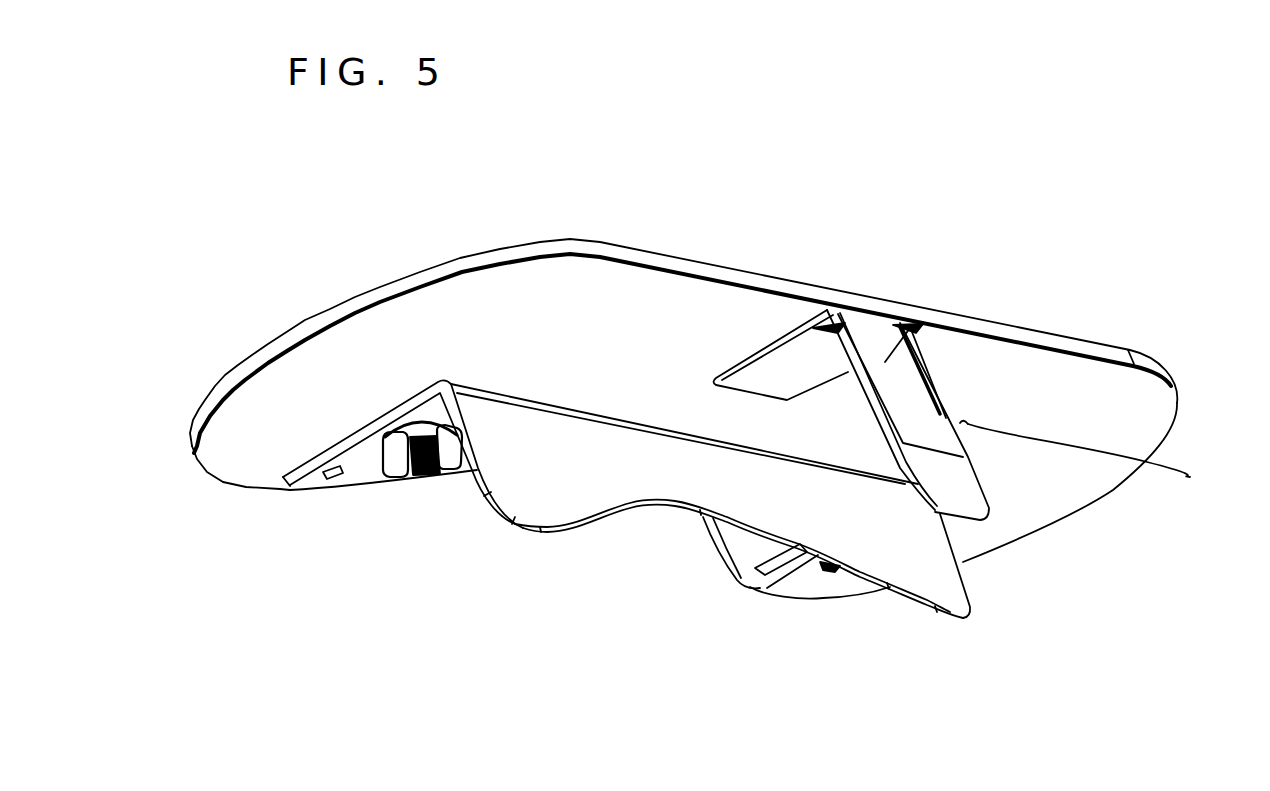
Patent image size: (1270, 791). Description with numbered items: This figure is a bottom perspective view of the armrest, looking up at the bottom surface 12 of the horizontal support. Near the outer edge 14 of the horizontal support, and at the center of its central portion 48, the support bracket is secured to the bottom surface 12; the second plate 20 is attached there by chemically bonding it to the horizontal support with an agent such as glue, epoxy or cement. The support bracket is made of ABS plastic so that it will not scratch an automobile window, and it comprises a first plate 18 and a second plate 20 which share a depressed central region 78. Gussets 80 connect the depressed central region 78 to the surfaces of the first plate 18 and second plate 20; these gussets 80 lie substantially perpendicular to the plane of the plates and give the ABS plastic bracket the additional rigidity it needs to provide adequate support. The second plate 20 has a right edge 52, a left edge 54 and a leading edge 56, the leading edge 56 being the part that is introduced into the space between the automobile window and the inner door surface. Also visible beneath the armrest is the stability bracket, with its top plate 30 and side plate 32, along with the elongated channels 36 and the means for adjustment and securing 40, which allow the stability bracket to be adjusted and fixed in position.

The bottom surface 12 is at (980, 387).
The outer edge 14 is at (677, 263).
The first plate 18 is at (780, 365).
The second plate 20 is at (943, 475).
The top plate 30 is at (310, 488).
The side plate 32 is at (617, 490).
The elongated channels 36 is at (340, 475).
The means for adjustment and securing 40 is at (433, 473).
The central portion 48 is at (873, 316).
The right edge 52 is at (1095, 457).
The left edge 54 is at (870, 418).
The leading edge 56 is at (960, 525).
The depressed central region 78 is at (910, 327).
The gussets 80 is at (823, 312).